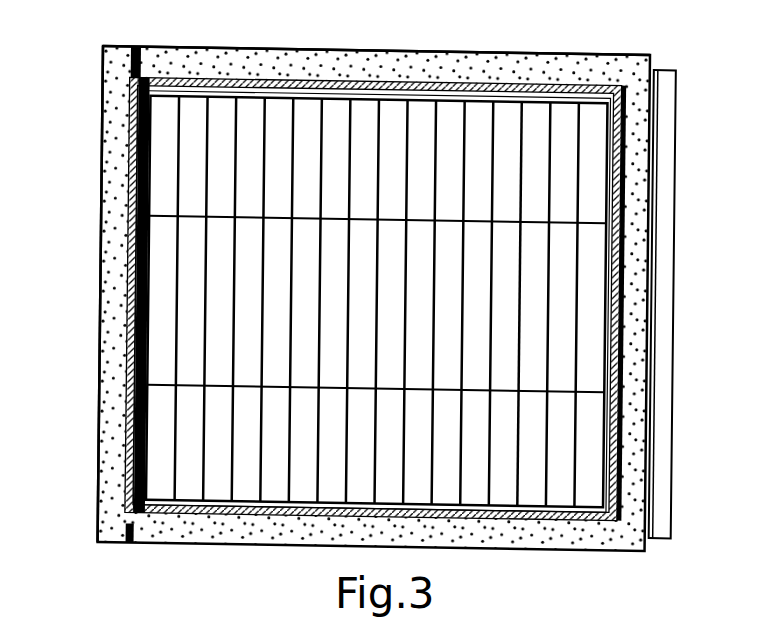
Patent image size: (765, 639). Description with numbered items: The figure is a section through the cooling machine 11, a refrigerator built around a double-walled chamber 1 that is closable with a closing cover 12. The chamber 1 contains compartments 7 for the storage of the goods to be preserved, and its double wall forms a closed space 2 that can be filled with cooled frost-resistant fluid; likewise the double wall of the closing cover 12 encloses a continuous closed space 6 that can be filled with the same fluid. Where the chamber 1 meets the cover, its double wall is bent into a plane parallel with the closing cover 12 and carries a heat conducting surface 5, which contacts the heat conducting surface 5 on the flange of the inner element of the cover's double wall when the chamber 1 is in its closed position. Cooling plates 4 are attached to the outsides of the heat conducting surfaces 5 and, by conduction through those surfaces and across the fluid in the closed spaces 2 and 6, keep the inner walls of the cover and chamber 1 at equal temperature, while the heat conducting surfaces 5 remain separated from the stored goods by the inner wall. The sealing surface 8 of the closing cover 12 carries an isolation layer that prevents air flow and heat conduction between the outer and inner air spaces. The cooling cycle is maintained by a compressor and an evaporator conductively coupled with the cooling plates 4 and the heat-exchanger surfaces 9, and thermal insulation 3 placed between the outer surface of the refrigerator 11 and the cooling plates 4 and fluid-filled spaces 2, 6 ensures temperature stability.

The chamber 1 is at (306, 501).
The closed space 2 is at (576, 528).
The thermal insulation 3 is at (113, 94).
The cooling plate 4 is at (629, 184).
The heat conducting surface 5 is at (163, 115).
The continuous closed space 6 is at (133, 243).
The compartment 7 is at (528, 122).
The sealing surface 8 is at (128, 543).
The heat-exchanger surface 9 is at (665, 290).
The cooling machine 11 is at (572, 53).
The closing cover 12 is at (102, 142).